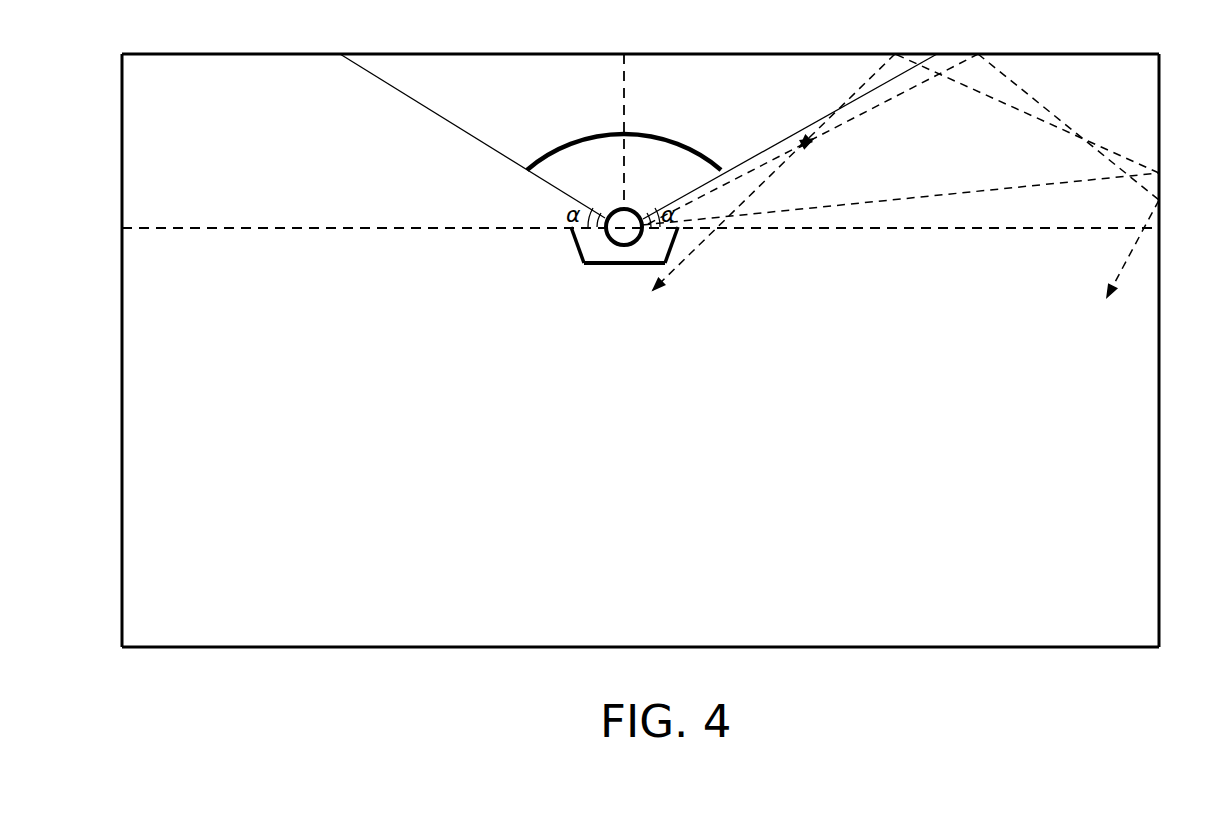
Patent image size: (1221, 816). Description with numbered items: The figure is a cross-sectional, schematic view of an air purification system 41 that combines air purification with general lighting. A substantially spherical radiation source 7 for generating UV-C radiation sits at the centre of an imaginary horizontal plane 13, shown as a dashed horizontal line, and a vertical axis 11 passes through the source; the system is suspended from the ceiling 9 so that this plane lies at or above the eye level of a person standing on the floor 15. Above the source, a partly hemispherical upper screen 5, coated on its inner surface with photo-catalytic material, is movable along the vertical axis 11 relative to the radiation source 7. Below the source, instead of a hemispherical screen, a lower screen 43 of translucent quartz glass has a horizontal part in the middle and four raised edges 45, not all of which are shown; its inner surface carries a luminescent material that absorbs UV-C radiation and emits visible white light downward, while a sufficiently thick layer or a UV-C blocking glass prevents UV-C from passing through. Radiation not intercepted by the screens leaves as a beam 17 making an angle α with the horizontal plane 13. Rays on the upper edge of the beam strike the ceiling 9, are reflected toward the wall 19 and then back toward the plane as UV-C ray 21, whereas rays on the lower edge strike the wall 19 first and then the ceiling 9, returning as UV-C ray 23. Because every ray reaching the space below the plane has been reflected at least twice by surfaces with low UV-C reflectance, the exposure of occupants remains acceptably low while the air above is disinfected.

The upper screen 5 is at (673, 139).
The radiation source 7 is at (612, 209).
The ceiling 9 is at (1098, 53).
The vertical axis 11 is at (628, 73).
The imaginary horizontal plane 13 is at (298, 232).
The floor 15 is at (352, 648).
The beam 17 is at (394, 97).
The wall 19 is at (1160, 103).
The UV-C ray 21 is at (1037, 100).
The UV-C ray 23 is at (917, 196).
The air purification system 41 is at (621, 123).
The lower screen 43 is at (605, 264).
The raised edges 45 is at (572, 247).